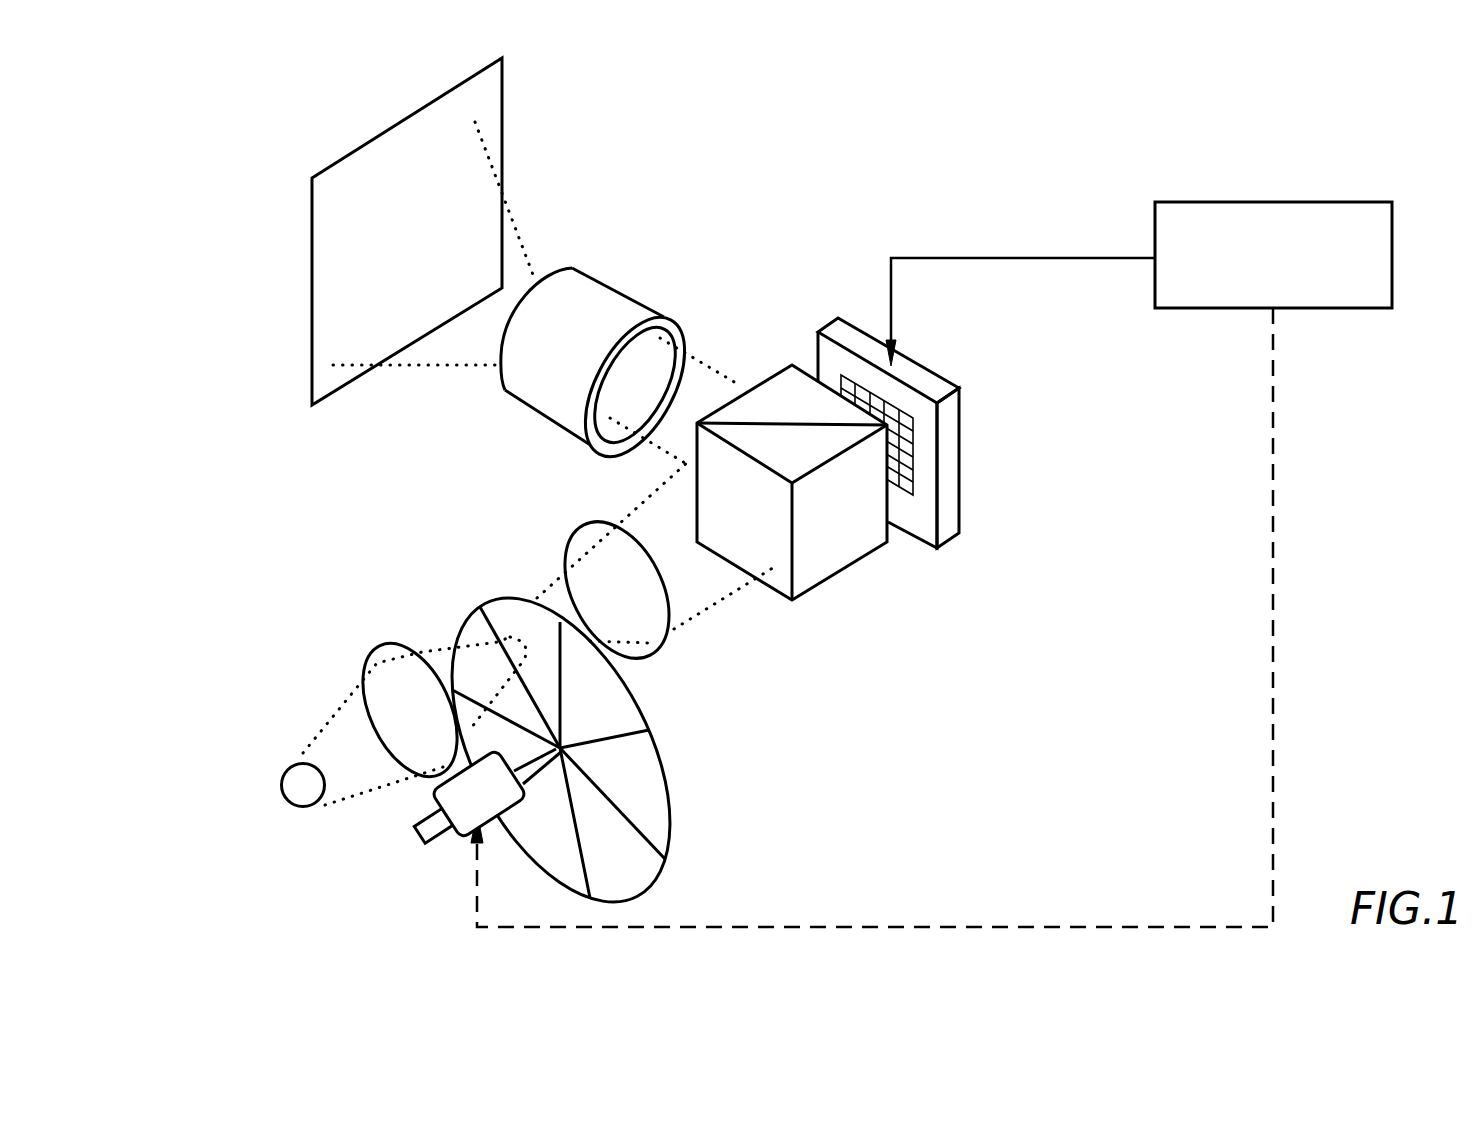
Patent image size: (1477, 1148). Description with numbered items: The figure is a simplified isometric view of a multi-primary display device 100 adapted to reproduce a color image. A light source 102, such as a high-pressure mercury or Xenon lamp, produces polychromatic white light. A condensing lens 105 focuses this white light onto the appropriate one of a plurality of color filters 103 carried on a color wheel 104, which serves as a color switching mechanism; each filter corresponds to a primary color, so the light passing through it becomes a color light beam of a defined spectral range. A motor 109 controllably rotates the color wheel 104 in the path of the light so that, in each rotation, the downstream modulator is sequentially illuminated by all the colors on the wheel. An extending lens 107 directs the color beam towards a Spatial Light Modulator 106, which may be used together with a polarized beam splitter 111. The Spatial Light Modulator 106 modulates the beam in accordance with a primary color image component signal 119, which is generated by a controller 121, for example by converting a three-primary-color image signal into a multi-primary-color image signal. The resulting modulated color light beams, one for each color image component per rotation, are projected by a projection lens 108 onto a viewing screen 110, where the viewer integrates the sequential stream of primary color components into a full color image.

The multi-primary display device 100 is at (212, 577).
The light source 102 is at (292, 777).
The color filters 103 is at (505, 615).
The color wheel 104 is at (600, 734).
The condensing lens 105 is at (398, 665).
The Spatial Light Modulator (SLM) 106 is at (947, 530).
The extending lens 107 is at (607, 540).
The projection lens 108 is at (621, 307).
The motor 109 is at (432, 825).
The viewing screen 110 is at (490, 90).
The polarized beam splitter 111 is at (834, 555).
The primary color image component signal 119 is at (972, 257).
The controller 121 is at (1308, 198).